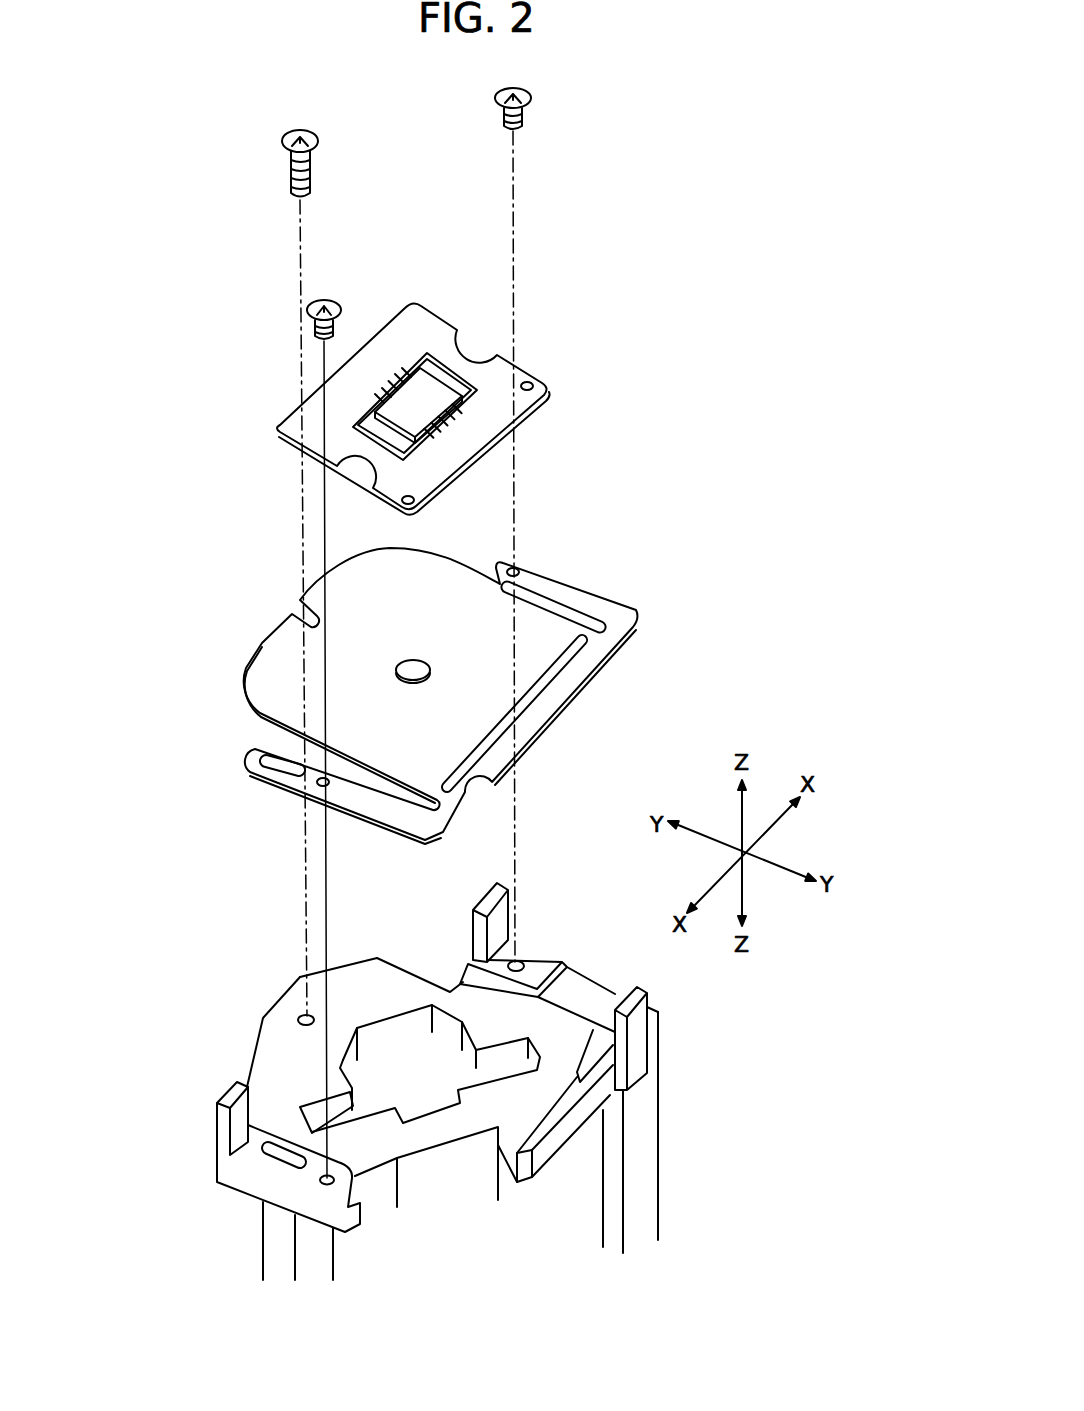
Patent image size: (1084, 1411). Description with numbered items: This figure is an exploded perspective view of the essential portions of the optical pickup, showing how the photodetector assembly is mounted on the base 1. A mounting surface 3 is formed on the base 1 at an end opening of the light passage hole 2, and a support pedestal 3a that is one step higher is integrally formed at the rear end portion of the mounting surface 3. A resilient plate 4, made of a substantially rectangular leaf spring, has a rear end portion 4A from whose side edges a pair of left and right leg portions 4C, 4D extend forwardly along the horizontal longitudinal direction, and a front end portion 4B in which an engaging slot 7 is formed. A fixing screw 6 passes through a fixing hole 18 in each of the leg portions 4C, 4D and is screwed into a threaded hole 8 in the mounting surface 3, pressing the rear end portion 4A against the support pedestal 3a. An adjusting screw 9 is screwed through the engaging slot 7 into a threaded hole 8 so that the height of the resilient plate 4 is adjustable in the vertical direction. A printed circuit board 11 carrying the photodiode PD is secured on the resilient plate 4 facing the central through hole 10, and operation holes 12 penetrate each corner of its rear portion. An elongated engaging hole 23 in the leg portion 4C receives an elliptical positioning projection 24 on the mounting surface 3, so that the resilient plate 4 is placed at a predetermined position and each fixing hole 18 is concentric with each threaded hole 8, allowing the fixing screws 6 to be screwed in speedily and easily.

The base 1 is at (671, 1118).
The light passage hole 2 is at (430, 1103).
The mounting surface 3 is at (477, 1081).
The support pedestal 3a is at (555, 1107).
The resilient plate 4 is at (416, 697).
The rear end portion 4A is at (538, 712).
The front end portion 4B is at (262, 650).
The leg portion 4C is at (391, 708).
The leg portion 4D is at (578, 596).
The fixing screw 6 is at (507, 133).
The engaging slot 7 is at (302, 606).
The threaded hole 8 is at (304, 1016).
The adjusting screw 9 is at (290, 178).
The central through hole 10 is at (413, 660).
The printed circuit board 11 is at (463, 425).
The operation hole 12 is at (531, 384).
The fixing hole 18 is at (320, 786).
The engaging hole 23 is at (266, 768).
The positioning projection 24 is at (280, 1153).
The photodiode PD is at (440, 393).